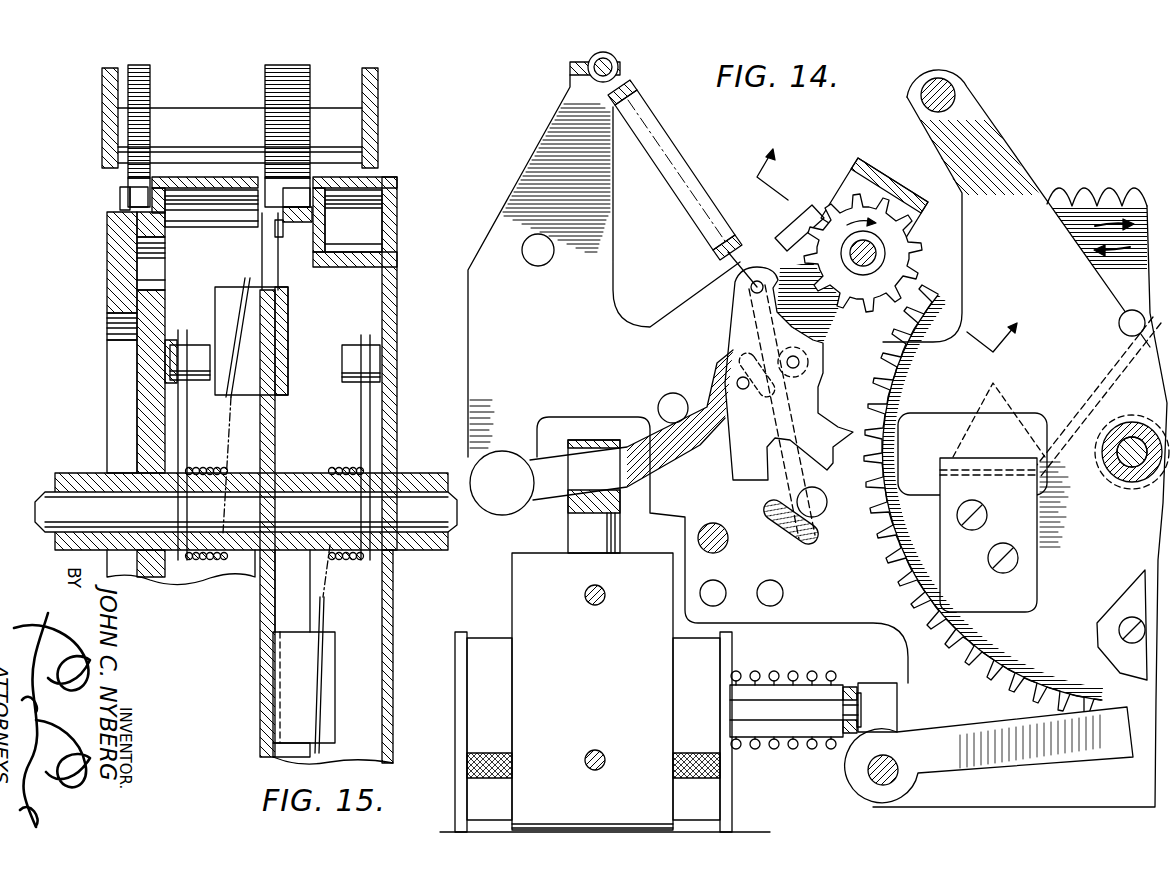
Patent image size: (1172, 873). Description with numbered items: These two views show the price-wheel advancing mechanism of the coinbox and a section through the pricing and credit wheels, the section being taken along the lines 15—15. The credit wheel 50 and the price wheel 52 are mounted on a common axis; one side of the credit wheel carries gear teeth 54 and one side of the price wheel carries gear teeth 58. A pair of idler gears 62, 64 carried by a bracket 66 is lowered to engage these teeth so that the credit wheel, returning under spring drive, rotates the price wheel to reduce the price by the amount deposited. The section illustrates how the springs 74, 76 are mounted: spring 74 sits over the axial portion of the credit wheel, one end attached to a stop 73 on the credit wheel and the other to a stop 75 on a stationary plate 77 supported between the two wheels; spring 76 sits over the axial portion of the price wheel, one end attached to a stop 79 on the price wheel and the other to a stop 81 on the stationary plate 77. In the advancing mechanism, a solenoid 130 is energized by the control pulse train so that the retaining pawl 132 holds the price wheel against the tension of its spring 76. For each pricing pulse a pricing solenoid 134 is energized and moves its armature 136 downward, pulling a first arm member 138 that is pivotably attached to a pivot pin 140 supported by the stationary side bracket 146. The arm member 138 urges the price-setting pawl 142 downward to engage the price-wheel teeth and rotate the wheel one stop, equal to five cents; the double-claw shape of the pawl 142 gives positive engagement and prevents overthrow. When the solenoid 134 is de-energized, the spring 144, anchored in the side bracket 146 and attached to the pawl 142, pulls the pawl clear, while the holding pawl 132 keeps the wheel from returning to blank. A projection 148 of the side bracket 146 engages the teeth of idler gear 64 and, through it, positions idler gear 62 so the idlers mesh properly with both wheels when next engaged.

In FIG. 15, the credit wheel 50 is at (107, 279).
In FIG. 14, the credit wheel 50 is at (1108, 189).
In FIG. 15, the price wheel 52 is at (396, 178).
In FIG. 14, the price wheel 52 is at (988, 673).
In FIG. 15, the gear teeth 54 is at (120, 196).
In FIG. 14, the gear teeth 54 is at (1047, 195).
In FIG. 15, the gear teeth 58 is at (296, 214).
In FIG. 14, the gear teeth 58 is at (897, 578).
In FIG. 15, the idler gear 62 is at (150, 82).
In FIG. 14, the idler gear 62 is at (841, 198).
In FIG. 15, the idler gear 64 is at (265, 92).
In FIG. 15, the bracket 66 is at (378, 77).
In FIG. 14, the bracket 66 is at (897, 190).
In FIG. 15, the stop 73 is at (196, 345).
In FIG. 14, the stop 73 is at (1132, 310).
In FIG. 15, the spring 74 is at (198, 467).
In FIG. 14, the spring 74 is at (1128, 381).
In FIG. 15, the stop 75 is at (229, 287).
In FIG. 14, the stop 75 is at (947, 465).
In FIG. 15, the spring 76 is at (334, 467).
In FIG. 15, the stationary plate 77 is at (258, 649).
In FIG. 14, the stationary plate 77 is at (1116, 410).
In FIG. 15, the stop 79 is at (349, 345).
In FIG. 15, the stop 81 is at (325, 640).
In FIG. 14, the stop 81 is at (1133, 587).
In FIG. 14, the solenoid 130 is at (485, 643).
In FIG. 14, the retaining pawl 132 is at (1124, 757).
In FIG. 14, the pricing solenoid 134 is at (512, 589).
In FIG. 14, the armature 136 is at (577, 529).
In FIG. 14, the first arm member 138 is at (703, 452).
In FIG. 14, the pivot pin 140 is at (503, 457).
In FIG. 14, the price-setting pawl 142 is at (779, 416).
In FIG. 14, the spring 144 is at (676, 125).
In FIG. 14, the side bracket 146 is at (637, 337).
In FIG. 14, the projection 148 is at (793, 215).
In FIG. 14, the section line 15 is at (894, 240).